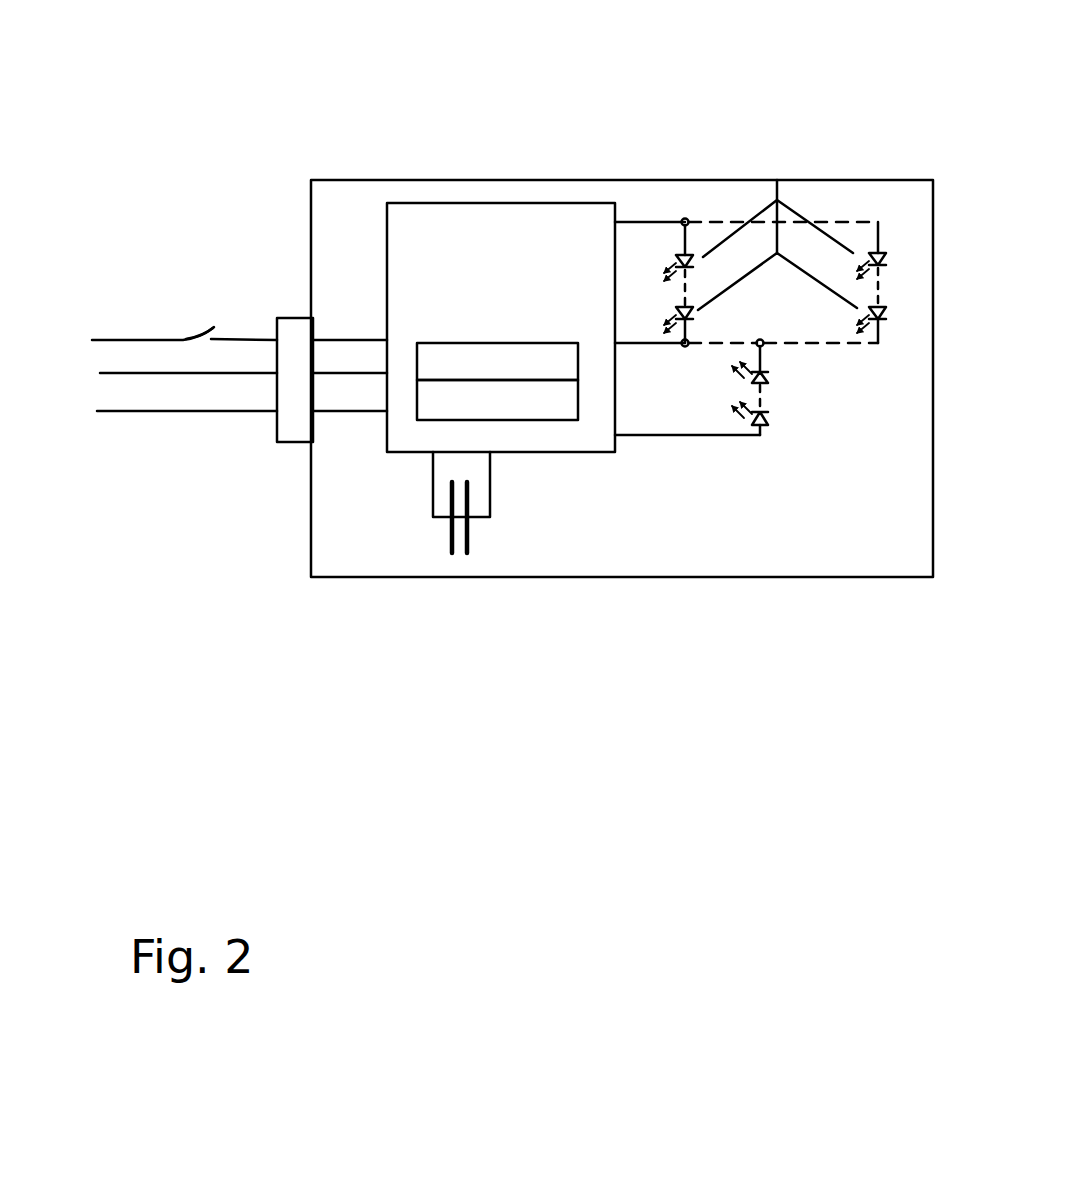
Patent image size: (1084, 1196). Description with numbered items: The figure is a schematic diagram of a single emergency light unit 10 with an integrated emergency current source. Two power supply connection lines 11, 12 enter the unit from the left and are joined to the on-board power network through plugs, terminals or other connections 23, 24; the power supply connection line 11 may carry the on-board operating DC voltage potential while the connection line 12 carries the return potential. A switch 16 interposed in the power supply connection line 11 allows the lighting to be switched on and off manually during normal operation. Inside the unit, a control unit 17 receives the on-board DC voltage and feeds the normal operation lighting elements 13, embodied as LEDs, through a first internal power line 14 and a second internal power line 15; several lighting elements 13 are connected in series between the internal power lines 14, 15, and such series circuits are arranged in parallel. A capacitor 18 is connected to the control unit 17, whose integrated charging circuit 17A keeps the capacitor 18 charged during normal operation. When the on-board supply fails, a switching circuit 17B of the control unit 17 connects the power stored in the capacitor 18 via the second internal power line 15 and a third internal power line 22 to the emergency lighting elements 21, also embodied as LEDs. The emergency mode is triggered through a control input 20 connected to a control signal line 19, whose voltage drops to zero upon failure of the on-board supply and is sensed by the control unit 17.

The emergency light unit 10 is at (389, 180).
The power supply connection line 11 is at (120, 338).
The power supply connection line 12 is at (100, 372).
The lighting elements 13 is at (777, 180).
The first internal power line 14 is at (643, 222).
The second internal power line 15 is at (645, 345).
The switch 16 is at (207, 334).
The control unit 17 is at (501, 229).
The charging circuit 17A is at (497, 401).
The switching circuit 17B is at (497, 363).
The capacitor 18 is at (468, 540).
The control signal line 19 is at (175, 412).
The control input 20 is at (313, 417).
The emergency lighting element 21 is at (768, 380).
The third internal power line 22 is at (712, 437).
The connection 23 is at (310, 375).
The connection 24 is at (313, 342).